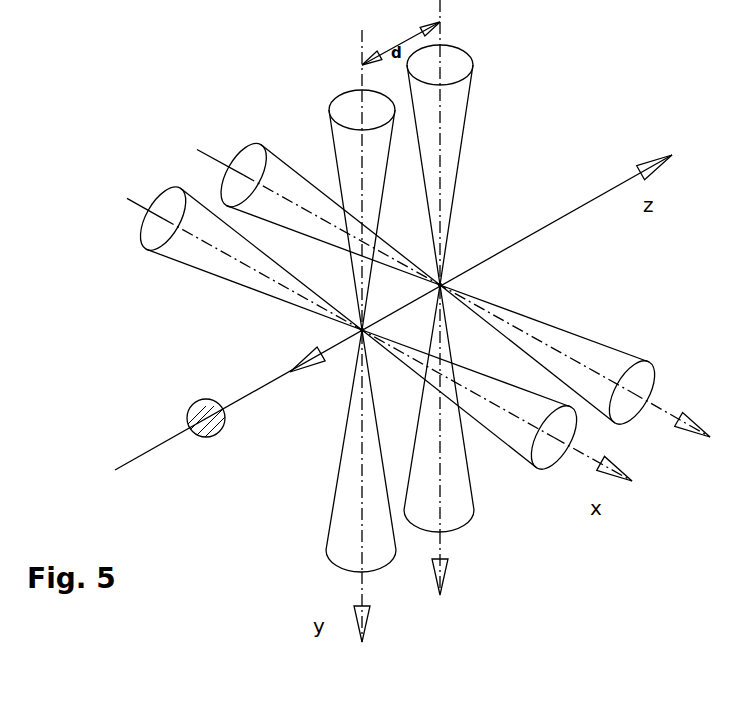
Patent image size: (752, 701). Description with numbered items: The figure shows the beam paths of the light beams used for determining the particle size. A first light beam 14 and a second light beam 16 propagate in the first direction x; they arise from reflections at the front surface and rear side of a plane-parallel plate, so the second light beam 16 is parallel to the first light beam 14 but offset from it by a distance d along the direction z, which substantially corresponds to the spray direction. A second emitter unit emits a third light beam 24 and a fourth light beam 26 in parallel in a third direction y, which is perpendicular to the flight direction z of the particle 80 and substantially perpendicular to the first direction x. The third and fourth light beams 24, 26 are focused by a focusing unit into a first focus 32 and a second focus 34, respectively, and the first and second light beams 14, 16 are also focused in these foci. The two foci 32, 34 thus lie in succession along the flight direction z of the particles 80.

The first light beam 14 is at (180, 255).
The second light beam 16 is at (253, 192).
The third light beam 24 is at (348, 135).
The fourth light beam 26 is at (452, 135).
The first focus 32 is at (343, 332).
The second focus 34 is at (463, 283).
The particle 80 is at (217, 433).